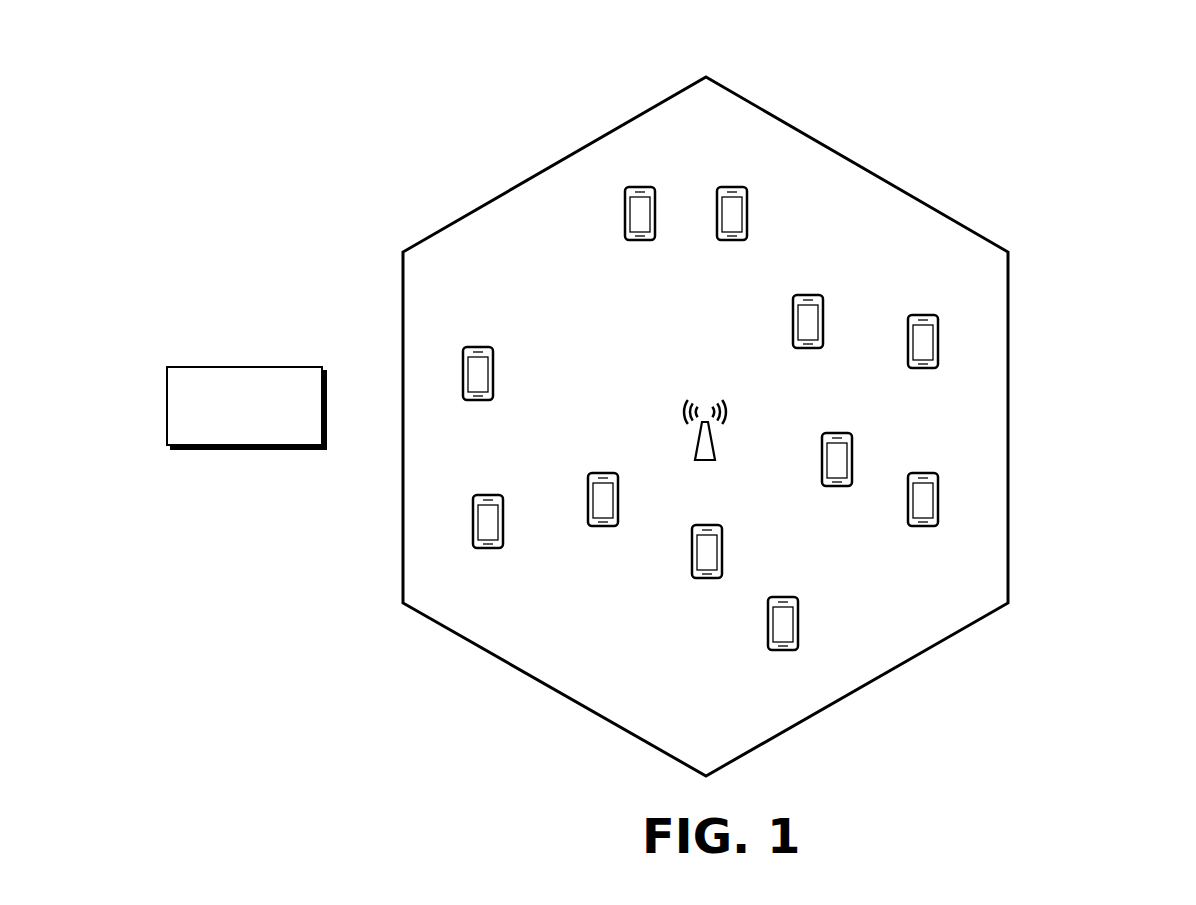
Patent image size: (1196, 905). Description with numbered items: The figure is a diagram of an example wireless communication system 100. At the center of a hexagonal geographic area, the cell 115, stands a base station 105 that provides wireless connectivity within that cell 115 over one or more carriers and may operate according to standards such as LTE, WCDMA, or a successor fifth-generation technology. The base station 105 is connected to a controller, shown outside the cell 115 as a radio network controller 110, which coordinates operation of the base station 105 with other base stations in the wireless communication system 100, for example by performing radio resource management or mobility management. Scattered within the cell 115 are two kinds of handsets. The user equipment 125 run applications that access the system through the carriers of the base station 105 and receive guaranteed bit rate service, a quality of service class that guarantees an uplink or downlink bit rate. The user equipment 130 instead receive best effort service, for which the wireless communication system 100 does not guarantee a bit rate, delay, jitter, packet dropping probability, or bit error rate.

The wireless communication system 100 is at (1096, 80).
The base station 105 is at (705, 462).
The radio network controller 110 is at (231, 428).
The cell 115 is at (598, 718).
The user equipment 125 is at (725, 243).
The user equipment 130 is at (634, 243).